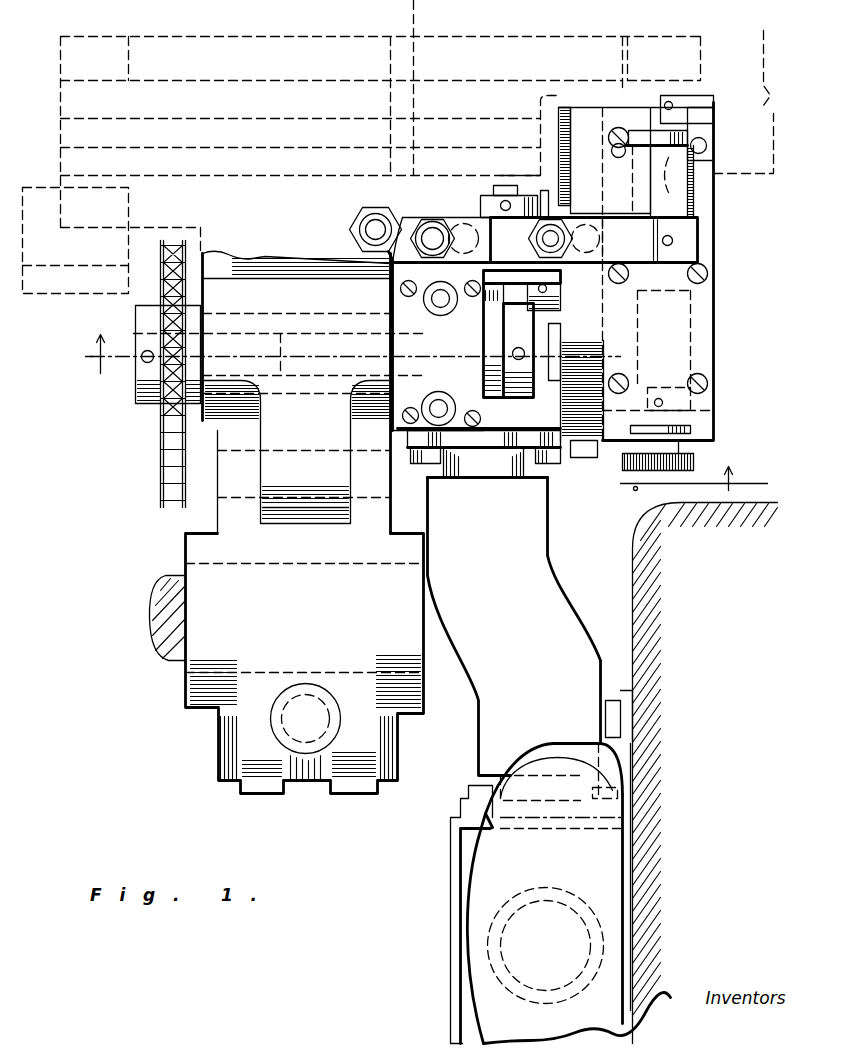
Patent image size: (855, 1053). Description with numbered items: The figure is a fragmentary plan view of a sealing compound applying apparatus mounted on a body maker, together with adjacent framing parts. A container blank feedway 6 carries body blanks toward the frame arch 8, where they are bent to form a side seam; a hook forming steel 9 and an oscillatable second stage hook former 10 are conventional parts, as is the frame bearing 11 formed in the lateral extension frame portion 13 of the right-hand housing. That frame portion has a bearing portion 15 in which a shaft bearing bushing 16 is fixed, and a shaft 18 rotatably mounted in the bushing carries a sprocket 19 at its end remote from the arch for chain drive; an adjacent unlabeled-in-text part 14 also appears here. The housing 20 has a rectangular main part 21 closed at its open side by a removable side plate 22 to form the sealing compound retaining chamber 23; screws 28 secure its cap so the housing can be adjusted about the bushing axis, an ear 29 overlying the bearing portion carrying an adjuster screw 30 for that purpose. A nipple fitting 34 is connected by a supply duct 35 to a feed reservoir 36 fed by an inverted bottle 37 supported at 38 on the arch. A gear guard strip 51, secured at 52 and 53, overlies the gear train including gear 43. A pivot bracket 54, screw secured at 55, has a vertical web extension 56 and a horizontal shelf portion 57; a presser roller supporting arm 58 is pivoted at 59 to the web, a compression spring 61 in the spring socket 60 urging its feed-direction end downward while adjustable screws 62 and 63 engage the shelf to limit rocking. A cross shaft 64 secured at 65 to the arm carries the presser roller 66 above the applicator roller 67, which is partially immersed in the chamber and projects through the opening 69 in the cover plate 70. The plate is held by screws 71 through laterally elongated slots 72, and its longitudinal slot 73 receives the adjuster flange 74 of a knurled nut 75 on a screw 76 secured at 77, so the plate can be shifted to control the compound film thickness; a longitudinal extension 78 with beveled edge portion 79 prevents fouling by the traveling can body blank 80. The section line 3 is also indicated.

The section line 3- 3 is at (422, 414).
The container blank feedway 6 is at (260, 95).
The frame arch 8 is at (631, 773).
The hook forming steel 9 is at (181, 172).
The oscillatable second stage hook former 10 is at (70, 287).
The frame bearing 11 is at (286, 664).
The lateral extension frame portion 13 is at (215, 262).
The slide member 14 is at (495, 343).
The bearing portion 15 is at (275, 292).
The shaft bearing bushing 16 is at (233, 323).
The shaft 18 is at (160, 405).
The sprocket 19 is at (160, 255).
The housing 20 is at (702, 101).
The rectangular main part 21 is at (630, 342).
The removable side plate 22 is at (700, 340).
The sealing compound retaining chamber 23 is at (668, 318).
The screws 28 is at (400, 312).
The ear 29 is at (355, 207).
The adjuster screw 30 is at (360, 227).
The nipple fitting 34 is at (492, 478).
The supply duct 35 is at (527, 520).
The feed reservoir 36 is at (448, 947).
The inverted bottle 37 is at (598, 867).
The bottle support 38 is at (618, 762).
The gear 43 is at (591, 191).
The gear guard strip 51 is at (550, 300).
The guard strip securing point 52 is at (600, 238).
The guard strip securing point 53 is at (580, 457).
The pivot bracket 54 is at (393, 388).
The bracket screws 55 is at (366, 262).
The vertical web extension 56 is at (548, 273).
The horizontal shelf portion 57 is at (452, 230).
The presser roller supporting arm 58 is at (640, 247).
The pivot 59 is at (503, 194).
The spring socket 60 is at (481, 187).
The compression spring 61 is at (430, 222).
The adjustable screw 62 is at (544, 215).
The adjustable screw 63 is at (412, 226).
The cross shaft 64 is at (690, 200).
The cross shaft fastening 65 is at (680, 243).
The presser roller 66 is at (635, 137).
The applicator roller 67 is at (714, 115).
The opening 69 is at (714, 160).
The cover plate 70 is at (705, 362).
The screws 71 is at (607, 132).
The laterally elongated slots 72 is at (608, 150).
The longitudinal slot 73 is at (690, 427).
The adjuster flange 74 is at (690, 440).
The knurled nut 75 is at (622, 473).
The screw 76 is at (712, 403).
The screw fastening 77 is at (660, 396).
The longitudinal extension 78 is at (582, 112).
The beveled edge portion 79 is at (563, 118).
The can body blank 80 is at (778, 68).